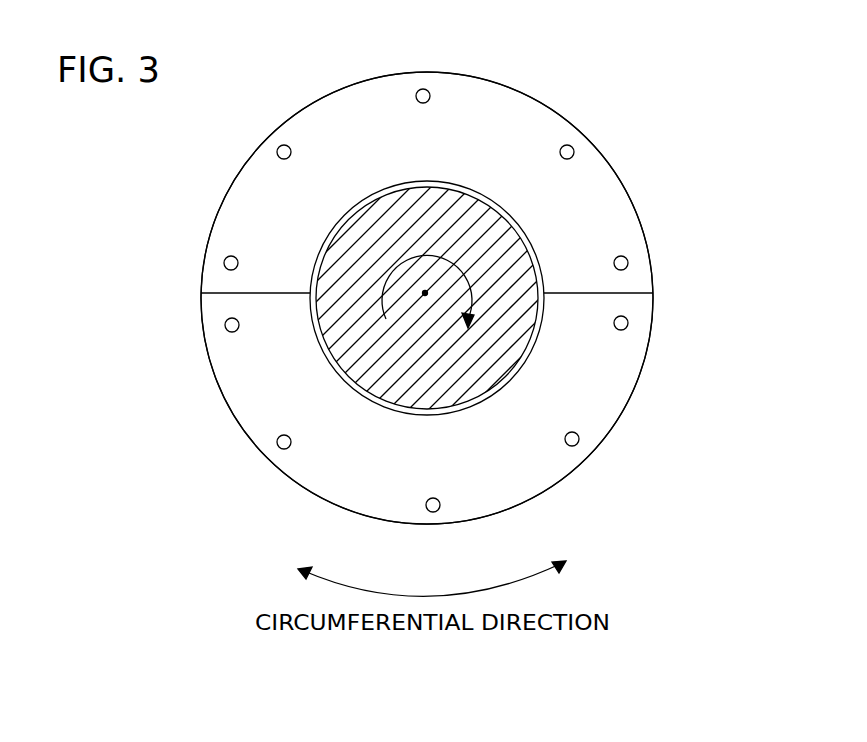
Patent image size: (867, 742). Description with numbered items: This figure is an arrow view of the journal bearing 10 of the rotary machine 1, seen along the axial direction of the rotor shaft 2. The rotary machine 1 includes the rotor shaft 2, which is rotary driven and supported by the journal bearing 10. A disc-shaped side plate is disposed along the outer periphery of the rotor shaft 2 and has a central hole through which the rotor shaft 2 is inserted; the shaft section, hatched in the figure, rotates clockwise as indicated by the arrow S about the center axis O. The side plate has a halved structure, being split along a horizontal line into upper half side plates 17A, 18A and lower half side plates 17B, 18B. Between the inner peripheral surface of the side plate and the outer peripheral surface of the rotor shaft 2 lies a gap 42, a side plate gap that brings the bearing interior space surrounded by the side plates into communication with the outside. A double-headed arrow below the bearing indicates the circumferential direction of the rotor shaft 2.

The rotary machine 1 is at (766, 48).
The rotor shaft 2 is at (424, 213).
The journal bearing 10 is at (593, 132).
The gap (side plate gap) 42 is at (368, 192).
The upper half side plate 18A is at (360, 182).
The lower half side plate 18B is at (406, 408).
The upper half side plate 17A is at (237, 220).
The lower half side plate 17B is at (255, 417).